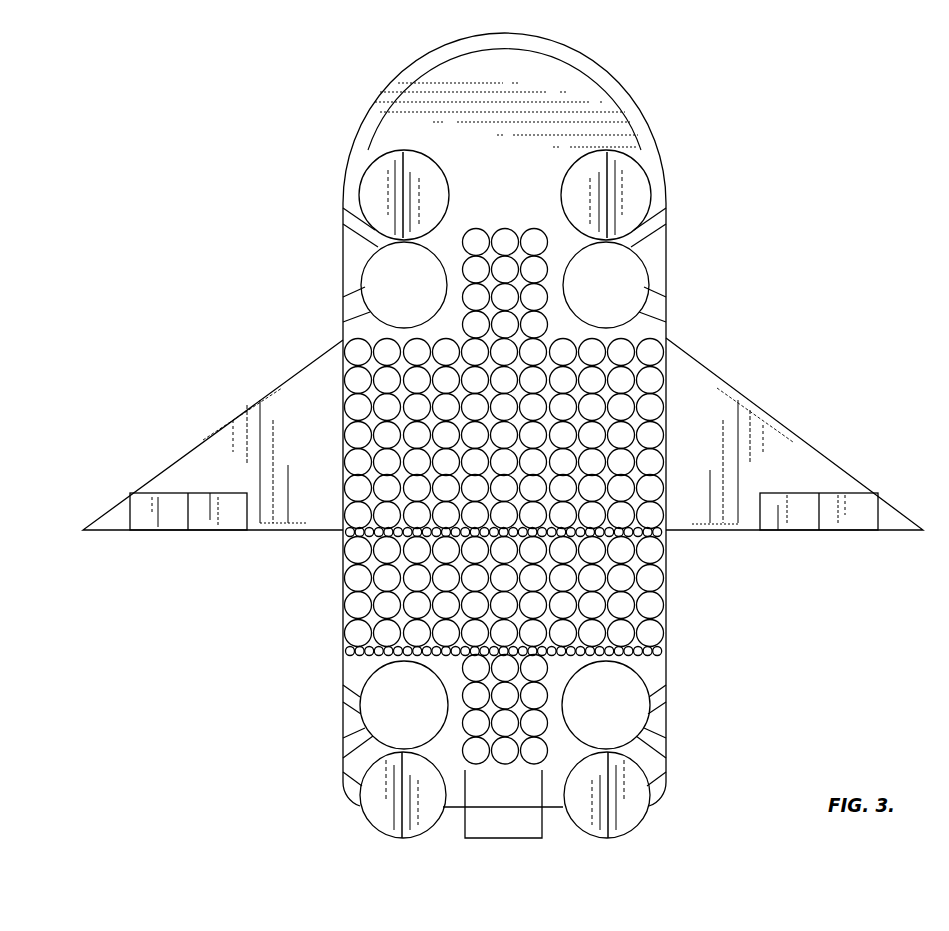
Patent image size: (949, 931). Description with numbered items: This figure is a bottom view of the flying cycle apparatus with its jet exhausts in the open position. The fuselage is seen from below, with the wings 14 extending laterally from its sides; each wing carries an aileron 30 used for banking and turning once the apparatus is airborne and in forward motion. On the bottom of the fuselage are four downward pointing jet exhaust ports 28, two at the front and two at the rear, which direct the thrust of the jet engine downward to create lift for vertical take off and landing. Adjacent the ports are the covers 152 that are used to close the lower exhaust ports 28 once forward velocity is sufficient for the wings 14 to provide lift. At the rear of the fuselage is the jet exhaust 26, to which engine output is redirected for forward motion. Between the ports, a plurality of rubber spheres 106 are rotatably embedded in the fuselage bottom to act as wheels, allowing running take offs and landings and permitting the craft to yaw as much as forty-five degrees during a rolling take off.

The wings 14 is at (235, 410).
The jet exhaust 26 is at (492, 840).
The jet exhaust ports 28 is at (394, 278).
The ailerons 30 is at (227, 532).
The rubber spheres 106 is at (667, 548).
The covers 152 is at (387, 153).